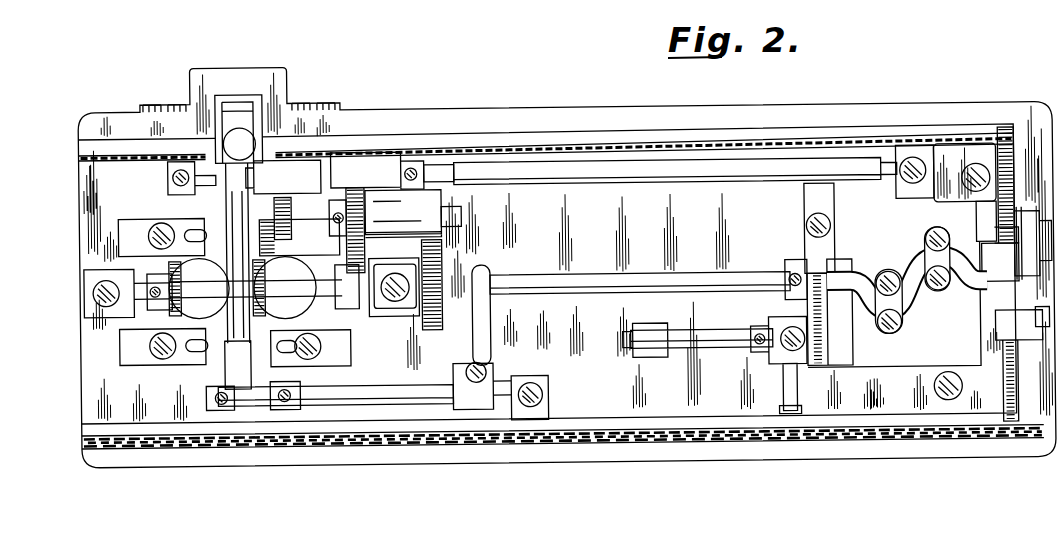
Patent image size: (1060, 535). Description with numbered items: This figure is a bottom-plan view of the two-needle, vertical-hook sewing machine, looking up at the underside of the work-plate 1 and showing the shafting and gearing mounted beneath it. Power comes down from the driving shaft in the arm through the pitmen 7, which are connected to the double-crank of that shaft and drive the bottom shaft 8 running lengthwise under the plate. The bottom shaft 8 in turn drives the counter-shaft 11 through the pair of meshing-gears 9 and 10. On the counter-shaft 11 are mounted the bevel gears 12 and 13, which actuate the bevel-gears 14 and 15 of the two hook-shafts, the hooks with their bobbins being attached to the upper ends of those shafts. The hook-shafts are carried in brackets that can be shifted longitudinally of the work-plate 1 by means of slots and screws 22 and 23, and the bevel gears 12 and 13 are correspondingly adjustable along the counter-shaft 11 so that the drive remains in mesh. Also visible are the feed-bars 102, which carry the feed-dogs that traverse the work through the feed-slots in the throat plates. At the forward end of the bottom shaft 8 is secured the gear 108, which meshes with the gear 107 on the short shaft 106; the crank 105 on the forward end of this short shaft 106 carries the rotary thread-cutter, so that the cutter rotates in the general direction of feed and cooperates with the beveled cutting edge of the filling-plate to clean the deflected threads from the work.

The work-plate 1 is at (690, 468).
The pitmen 7 is at (938, 301).
The bottom shaft 8 is at (652, 292).
The meshing-gear 9 is at (432, 333).
The meshing-gear 10 is at (441, 268).
The counter-shaft 11 is at (80, 292).
The bevel gear 12 is at (285, 287).
The bevel gear 13 is at (256, 288).
The bevel-gear of hook-shaft 14 is at (344, 254).
The bevel-gear of hook-shaft 15 is at (168, 263).
The slots and screws 22 is at (185, 240).
The slots and screws 23 is at (157, 238).
The feed-bars 102 is at (245, 199).
The crank 105 is at (276, 212).
The short shaft 106 is at (458, 214).
The gear 107 is at (352, 200).
The gear 108 is at (361, 265).